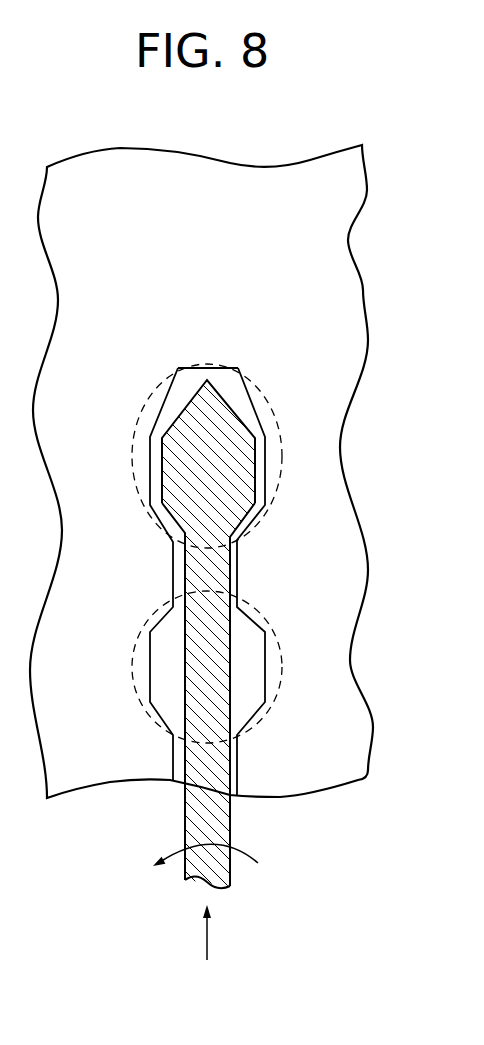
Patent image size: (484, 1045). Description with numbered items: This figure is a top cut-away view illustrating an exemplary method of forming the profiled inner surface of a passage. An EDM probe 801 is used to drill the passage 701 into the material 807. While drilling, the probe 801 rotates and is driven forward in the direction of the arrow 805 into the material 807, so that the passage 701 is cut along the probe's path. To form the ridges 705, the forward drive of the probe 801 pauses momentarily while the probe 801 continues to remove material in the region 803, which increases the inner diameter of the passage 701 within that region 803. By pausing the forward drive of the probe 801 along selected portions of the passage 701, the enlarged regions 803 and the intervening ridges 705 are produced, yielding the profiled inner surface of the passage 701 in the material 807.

The material 807 is at (226, 253).
The region 803 is at (267, 517).
The ridges 705 is at (173, 570).
The passage 701 is at (230, 795).
The EDM probe 801 is at (164, 465).
The arrow 805 is at (207, 942).